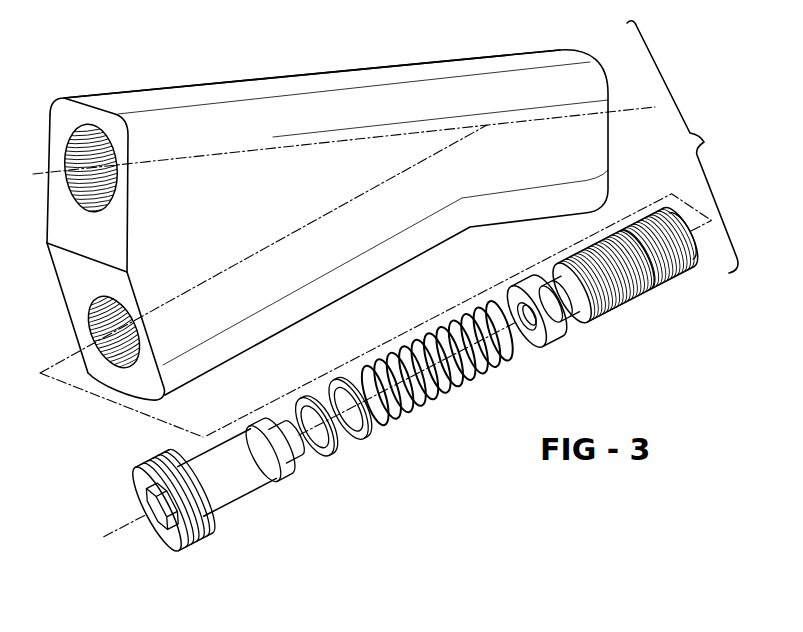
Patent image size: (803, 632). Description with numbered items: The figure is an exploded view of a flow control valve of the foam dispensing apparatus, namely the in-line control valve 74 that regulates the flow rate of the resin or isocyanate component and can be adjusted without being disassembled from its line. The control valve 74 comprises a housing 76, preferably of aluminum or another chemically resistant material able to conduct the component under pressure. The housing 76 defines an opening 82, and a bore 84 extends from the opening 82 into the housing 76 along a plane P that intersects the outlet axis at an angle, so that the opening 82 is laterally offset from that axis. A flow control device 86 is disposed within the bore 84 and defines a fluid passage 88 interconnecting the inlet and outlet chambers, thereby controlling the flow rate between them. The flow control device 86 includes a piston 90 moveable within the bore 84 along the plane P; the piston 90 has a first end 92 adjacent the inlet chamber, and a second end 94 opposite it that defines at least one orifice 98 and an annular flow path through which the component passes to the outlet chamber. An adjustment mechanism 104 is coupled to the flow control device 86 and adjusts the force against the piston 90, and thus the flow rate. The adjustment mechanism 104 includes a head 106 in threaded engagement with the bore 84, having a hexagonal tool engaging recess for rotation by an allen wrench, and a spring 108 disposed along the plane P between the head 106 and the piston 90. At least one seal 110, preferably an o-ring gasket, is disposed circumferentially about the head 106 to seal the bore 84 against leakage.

The control valve 74 is at (407, 44).
The housing 76 is at (494, 60).
The opening 82 is at (85, 333).
The bore 84 is at (108, 340).
The flow control device 86 is at (629, 298).
The fluid passage 88 is at (628, 292).
The piston 90 is at (643, 287).
The first end 92 is at (687, 247).
The second end 94 is at (532, 340).
The orifice 98 is at (570, 323).
The adjustment mechanism 104 is at (311, 465).
The head 106 is at (203, 538).
The spring 108 is at (427, 405).
The seal 110 is at (368, 437).